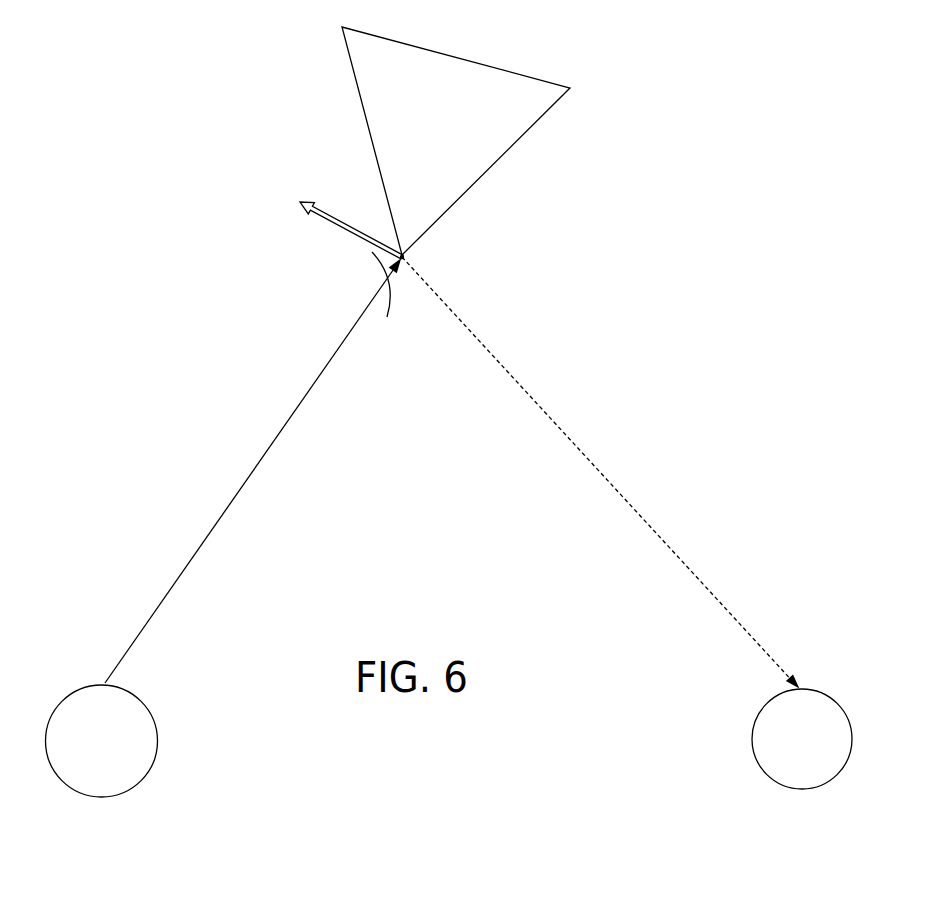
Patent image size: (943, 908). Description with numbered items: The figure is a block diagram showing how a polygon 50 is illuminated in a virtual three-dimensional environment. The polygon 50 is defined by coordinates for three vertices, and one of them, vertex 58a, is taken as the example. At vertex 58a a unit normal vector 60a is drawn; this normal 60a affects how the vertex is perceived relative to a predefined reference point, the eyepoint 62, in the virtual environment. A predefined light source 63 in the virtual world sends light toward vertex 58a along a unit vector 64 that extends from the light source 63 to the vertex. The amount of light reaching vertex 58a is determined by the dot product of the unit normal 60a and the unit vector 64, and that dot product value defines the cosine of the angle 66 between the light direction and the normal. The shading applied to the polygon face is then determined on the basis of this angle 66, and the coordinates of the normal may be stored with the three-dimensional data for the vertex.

The polygon 50 is at (467, 70).
The vertex 58a is at (409, 258).
The unit normal vector 60a is at (327, 222).
The eyepoint 62 is at (818, 702).
The light source 63 is at (140, 772).
The unit vector 64 is at (222, 512).
The angle 66 is at (390, 304).